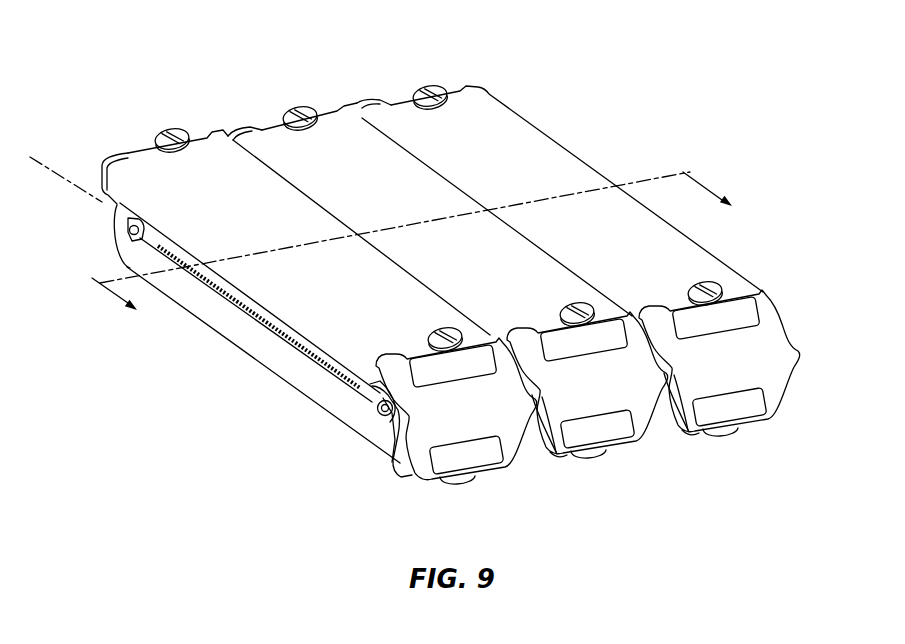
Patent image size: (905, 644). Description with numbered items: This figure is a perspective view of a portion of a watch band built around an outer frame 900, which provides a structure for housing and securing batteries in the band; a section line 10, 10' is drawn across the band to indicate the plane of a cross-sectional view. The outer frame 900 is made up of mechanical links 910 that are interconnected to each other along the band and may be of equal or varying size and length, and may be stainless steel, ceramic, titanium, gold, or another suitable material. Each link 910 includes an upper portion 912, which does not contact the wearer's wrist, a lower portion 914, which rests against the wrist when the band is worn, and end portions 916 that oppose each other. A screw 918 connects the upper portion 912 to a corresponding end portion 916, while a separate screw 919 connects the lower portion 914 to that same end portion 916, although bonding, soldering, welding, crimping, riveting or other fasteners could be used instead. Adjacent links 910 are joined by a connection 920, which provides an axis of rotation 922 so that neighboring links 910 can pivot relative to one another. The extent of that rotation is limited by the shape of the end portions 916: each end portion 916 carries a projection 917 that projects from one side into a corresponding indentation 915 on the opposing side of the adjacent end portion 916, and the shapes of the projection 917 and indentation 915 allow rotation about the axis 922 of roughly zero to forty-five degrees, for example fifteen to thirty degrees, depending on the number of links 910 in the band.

The outer frame 900 is at (168, 98).
The mechanical link 910 is at (490, 130).
The upper portion 912 is at (168, 203).
The lower portion 914 is at (213, 316).
The indentation 915 is at (400, 458).
The end portion 916 is at (197, 130).
The projection 917 is at (563, 451).
The screw 918 is at (718, 285).
The screw 919 is at (727, 428).
The connection 920 is at (388, 425).
The axis of rotation 922 is at (452, 452).
The section line 10 is at (360, 244).
The section line arrow 10' is at (721, 196).